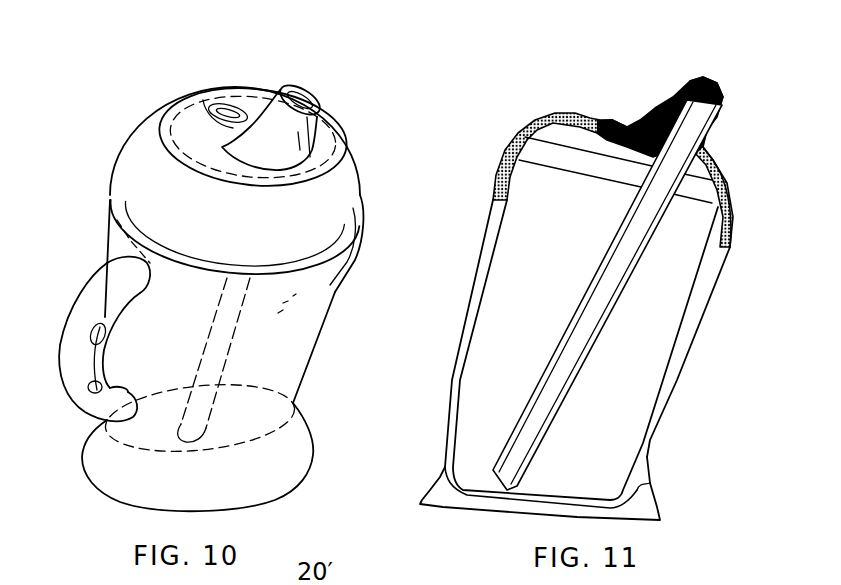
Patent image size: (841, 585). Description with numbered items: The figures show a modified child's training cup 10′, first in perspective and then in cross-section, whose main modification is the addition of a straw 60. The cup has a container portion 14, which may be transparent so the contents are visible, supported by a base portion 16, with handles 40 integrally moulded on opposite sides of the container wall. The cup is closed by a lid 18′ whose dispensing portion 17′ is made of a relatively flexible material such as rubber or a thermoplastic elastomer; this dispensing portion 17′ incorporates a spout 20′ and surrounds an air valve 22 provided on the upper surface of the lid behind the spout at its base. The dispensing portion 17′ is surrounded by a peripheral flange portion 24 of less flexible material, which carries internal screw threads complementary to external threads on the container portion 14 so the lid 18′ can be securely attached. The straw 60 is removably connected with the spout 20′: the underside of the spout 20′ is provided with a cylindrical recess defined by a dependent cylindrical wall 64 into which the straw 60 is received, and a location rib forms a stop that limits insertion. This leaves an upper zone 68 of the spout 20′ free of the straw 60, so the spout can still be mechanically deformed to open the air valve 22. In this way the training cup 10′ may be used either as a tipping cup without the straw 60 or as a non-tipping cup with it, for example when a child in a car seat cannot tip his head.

In FIG. 11, the training cup 10′ is at (392, 82).
In FIG. 10, the container portion 14 is at (290, 368).
In FIG. 11, the container portion 14 is at (470, 315).
In FIG. 10, the base portion 16 is at (280, 482).
In FIG. 11, the base portion 16 is at (436, 503).
In FIG. 10, the dispensing portion 17′ is at (197, 107).
In FIG. 11, the dispensing portion 17′ is at (567, 110).
In FIG. 10, the lid 18′ is at (143, 110).
In FIG. 10, the spout 20′ is at (297, 133).
In FIG. 11, the spout 20′ is at (653, 104).
In FIG. 11, the air valve 22 is at (607, 113).
In FIG. 10, the peripheral flange portion 24 is at (328, 207).
In FIG. 11, the peripheral flange portion 24 is at (722, 187).
In FIG. 10, the handles 40 is at (100, 293).
In FIG. 10, the straw 60 is at (197, 398).
In FIG. 11, the straw 60 is at (587, 360).
In FIG. 11, the dependent cylindrical wall 64 is at (708, 137).
In FIG. 11, the upper zone 68 is at (713, 90).